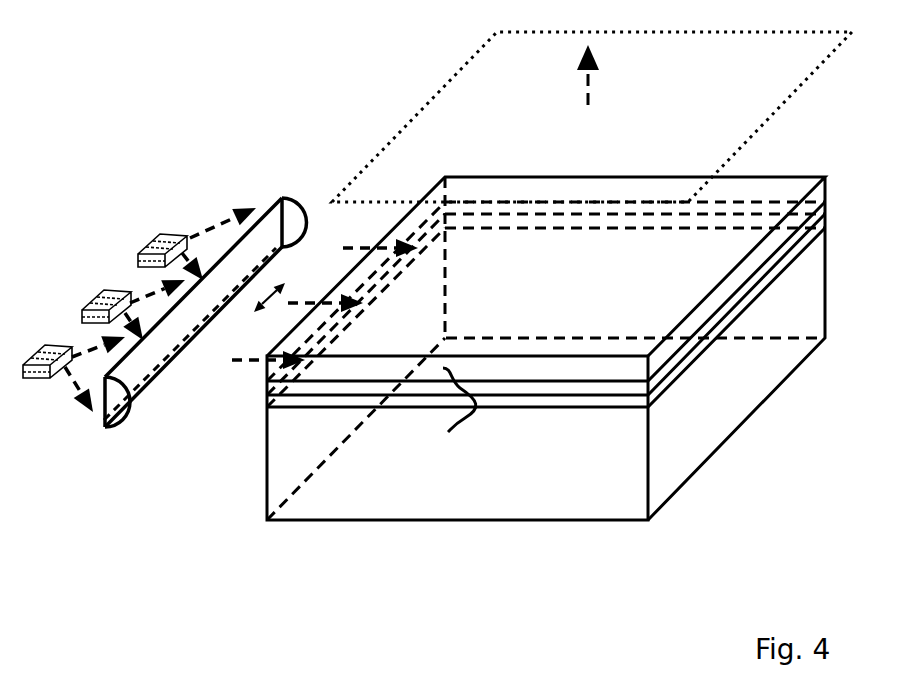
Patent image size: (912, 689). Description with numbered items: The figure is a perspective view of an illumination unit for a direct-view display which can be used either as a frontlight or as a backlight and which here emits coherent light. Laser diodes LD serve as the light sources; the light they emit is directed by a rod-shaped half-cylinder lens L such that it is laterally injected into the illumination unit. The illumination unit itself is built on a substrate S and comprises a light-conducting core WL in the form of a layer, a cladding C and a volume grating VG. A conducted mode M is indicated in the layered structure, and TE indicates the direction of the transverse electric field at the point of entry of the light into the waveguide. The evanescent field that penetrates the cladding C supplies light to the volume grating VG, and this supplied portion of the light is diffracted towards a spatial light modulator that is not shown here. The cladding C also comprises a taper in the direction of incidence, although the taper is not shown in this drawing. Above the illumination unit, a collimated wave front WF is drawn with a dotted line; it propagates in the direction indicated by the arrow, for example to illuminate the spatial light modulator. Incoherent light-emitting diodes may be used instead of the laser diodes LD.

The laser diodes LD is at (174, 219).
The rod-shaped half-cylinder lens L is at (305, 194).
The volume grating VG is at (400, 213).
The collimated wave front WF is at (766, 88).
The direction of the transverse electric field TE is at (241, 321).
The substrate S is at (285, 480).
The conducted mode M is at (453, 437).
The light-conducting core WL is at (583, 408).
The cladding C is at (628, 396).